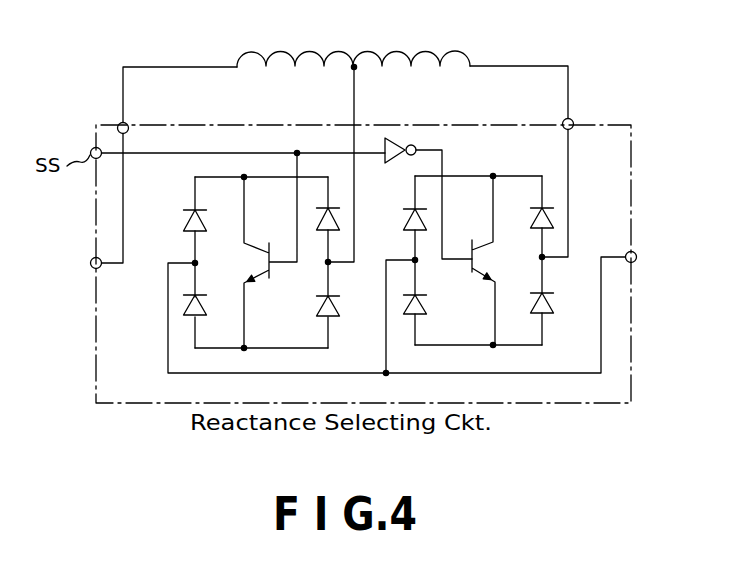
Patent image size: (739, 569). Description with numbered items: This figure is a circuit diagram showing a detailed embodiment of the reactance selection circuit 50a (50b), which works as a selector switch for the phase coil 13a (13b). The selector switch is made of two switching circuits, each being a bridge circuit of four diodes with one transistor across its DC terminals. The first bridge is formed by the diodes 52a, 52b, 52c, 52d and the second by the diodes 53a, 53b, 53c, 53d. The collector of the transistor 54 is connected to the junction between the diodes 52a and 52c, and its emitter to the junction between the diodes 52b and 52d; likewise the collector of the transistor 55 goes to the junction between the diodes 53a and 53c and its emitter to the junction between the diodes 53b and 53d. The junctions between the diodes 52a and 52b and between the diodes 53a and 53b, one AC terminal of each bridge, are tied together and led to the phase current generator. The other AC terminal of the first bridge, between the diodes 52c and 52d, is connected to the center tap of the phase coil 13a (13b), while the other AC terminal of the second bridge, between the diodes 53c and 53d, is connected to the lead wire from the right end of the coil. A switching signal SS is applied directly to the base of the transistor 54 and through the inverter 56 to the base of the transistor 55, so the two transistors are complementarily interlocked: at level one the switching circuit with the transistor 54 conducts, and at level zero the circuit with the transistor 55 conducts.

The phase coil 13a is at (353, 42).
The phase coil 13b is at (311, 52).
The reactance selection circuit 50a is at (397, 237).
The reactance selection circuit 50b is at (586, 124).
The diode 52a is at (186, 226).
The diode 52b is at (185, 314).
The diode 52c is at (340, 222).
The diode 52d is at (318, 310).
The diode 53a is at (403, 220).
The diode 53b is at (404, 315).
The diode 53c is at (535, 222).
The diode 53d is at (553, 313).
The transistor 54 is at (256, 258).
The transistor 55 is at (484, 276).
The inverter 56 is at (397, 139).